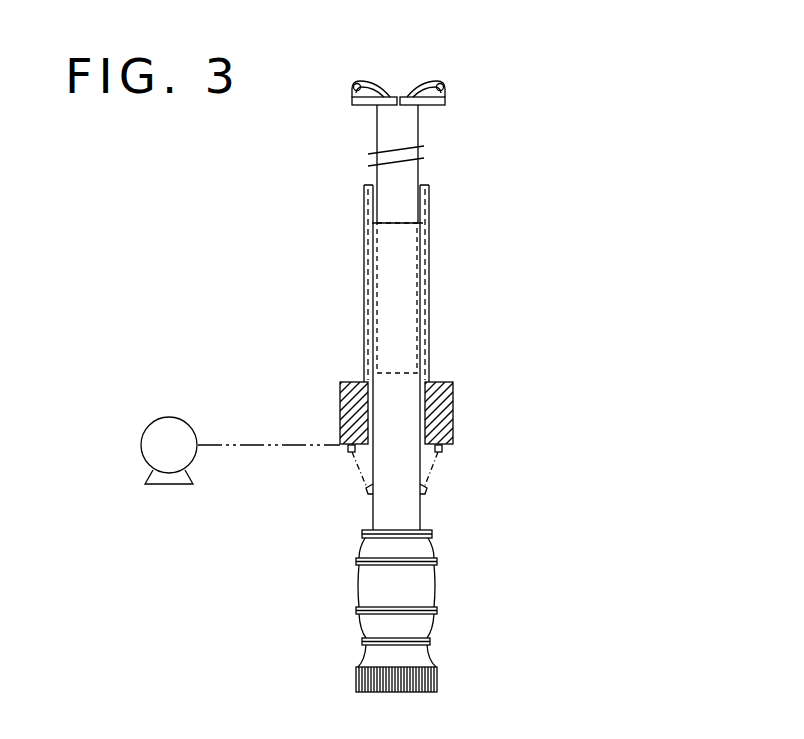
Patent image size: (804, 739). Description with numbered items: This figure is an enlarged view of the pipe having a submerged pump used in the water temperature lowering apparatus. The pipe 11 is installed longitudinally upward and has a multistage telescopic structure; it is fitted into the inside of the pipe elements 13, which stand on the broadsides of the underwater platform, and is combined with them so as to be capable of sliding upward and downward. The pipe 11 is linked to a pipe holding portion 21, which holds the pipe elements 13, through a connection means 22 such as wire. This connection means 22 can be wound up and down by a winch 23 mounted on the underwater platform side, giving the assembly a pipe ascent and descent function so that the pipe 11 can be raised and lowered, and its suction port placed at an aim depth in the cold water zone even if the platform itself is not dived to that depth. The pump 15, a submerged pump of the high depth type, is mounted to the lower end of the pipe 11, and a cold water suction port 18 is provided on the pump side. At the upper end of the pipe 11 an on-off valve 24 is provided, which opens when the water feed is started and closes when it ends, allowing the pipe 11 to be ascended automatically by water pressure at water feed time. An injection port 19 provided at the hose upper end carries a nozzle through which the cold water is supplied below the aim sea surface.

The pipe 11 is at (405, 270).
The pipe elements 13 is at (427, 309).
The pump 15 is at (432, 596).
The cold water suction port 18 is at (392, 682).
The injection port 19 is at (405, 93).
The pipe holding portion 21 is at (443, 420).
The connection means 22 is at (353, 456).
The winch 23 is at (170, 432).
The on-off valve 24 is at (393, 95).